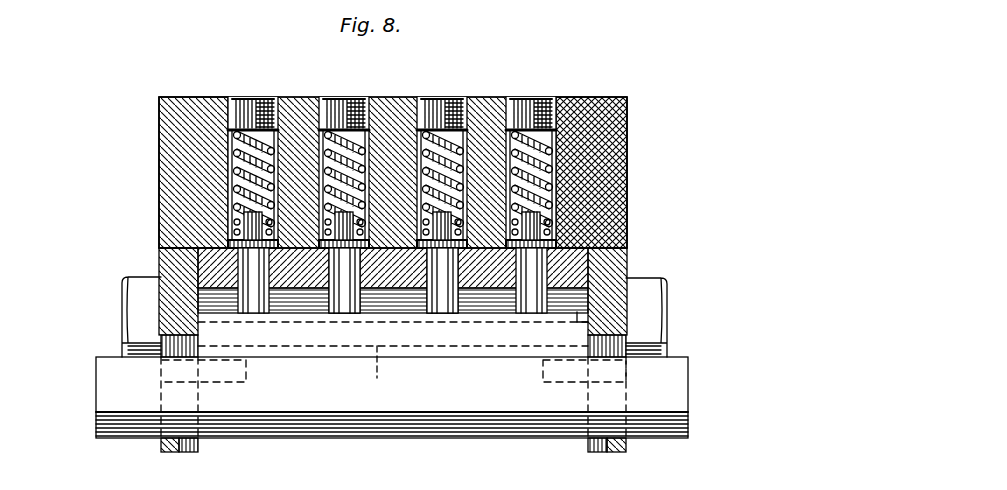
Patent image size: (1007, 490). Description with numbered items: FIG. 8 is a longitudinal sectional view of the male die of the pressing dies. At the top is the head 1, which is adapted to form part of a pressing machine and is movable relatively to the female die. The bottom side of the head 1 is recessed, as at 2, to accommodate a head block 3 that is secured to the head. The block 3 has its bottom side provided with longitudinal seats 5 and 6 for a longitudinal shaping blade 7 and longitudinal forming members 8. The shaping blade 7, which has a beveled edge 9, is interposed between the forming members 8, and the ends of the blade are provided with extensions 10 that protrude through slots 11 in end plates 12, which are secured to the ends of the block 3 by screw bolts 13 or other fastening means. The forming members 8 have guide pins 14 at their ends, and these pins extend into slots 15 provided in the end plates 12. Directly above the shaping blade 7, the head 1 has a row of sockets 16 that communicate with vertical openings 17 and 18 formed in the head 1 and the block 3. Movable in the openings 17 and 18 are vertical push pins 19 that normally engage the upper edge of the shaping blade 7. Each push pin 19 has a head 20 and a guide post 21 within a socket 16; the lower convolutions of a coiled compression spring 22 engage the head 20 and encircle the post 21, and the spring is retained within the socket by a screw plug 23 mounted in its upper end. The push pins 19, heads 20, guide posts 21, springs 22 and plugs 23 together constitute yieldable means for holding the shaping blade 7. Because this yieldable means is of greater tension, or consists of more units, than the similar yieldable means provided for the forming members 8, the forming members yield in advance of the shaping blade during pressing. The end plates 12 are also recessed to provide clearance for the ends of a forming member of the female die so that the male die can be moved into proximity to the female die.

The head 1 is at (625, 142).
The recess 2 is at (626, 213).
The head block 3 is at (596, 247).
The longitudinal seat 5 is at (162, 218).
The longitudinal seat 6 is at (439, 269).
The shaping blade 7 is at (393, 334).
The forming member 8 is at (378, 362).
The beveled edge 9 is at (283, 427).
The extension 10 is at (612, 86).
The slot 11 is at (125, 337).
The end plate 12 is at (172, 266).
The screw bolt 13 is at (142, 310).
The guide pin 14 is at (160, 442).
The slot 15 is at (212, 428).
The socket 16 is at (199, 100).
The vertical opening 17 is at (306, 252).
The vertical opening 18 is at (400, 300).
The push pin 19 is at (460, 312).
The head 20 is at (228, 235).
The guide post 21 is at (228, 212).
The coiled compression spring 22 is at (366, 125).
The screw plug 23 is at (350, 100).